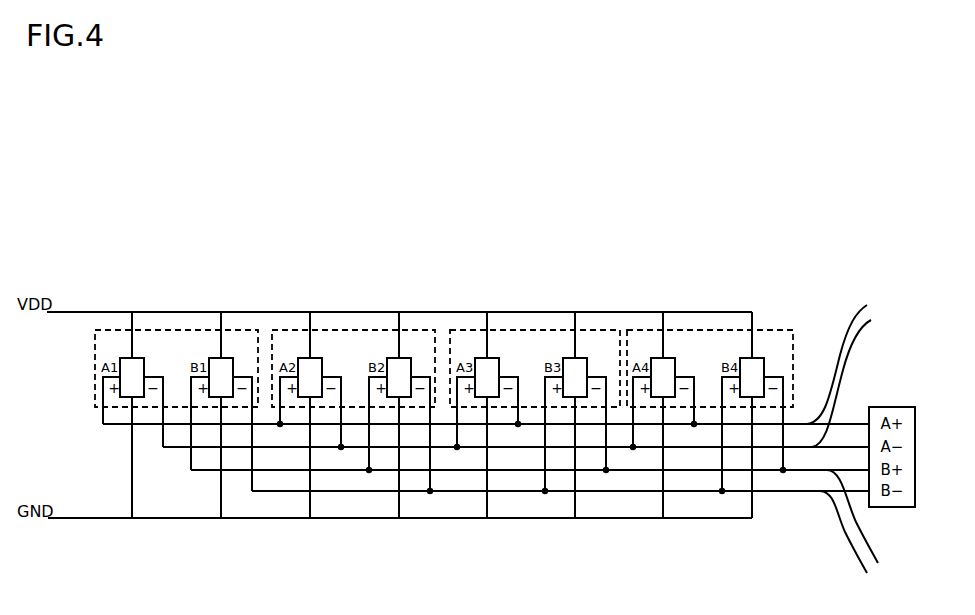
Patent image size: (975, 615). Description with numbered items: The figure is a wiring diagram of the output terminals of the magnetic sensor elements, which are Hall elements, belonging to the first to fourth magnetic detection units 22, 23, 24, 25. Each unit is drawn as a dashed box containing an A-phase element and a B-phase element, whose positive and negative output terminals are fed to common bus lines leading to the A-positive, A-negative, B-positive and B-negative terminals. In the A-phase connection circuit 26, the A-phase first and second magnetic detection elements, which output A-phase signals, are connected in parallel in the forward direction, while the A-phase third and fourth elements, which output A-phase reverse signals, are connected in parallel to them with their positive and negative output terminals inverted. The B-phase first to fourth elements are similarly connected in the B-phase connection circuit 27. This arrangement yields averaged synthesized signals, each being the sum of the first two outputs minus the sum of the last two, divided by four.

The first magnetic detection unit 22 is at (158, 328).
The second magnetic detection unit 23 is at (343, 328).
The third magnetic detection unit 24 is at (540, 328).
The fourth magnetic detection unit 25 is at (741, 328).
The A-phase connection circuit 26 is at (854, 368).
The B-phase connection circuit 27 is at (860, 533).